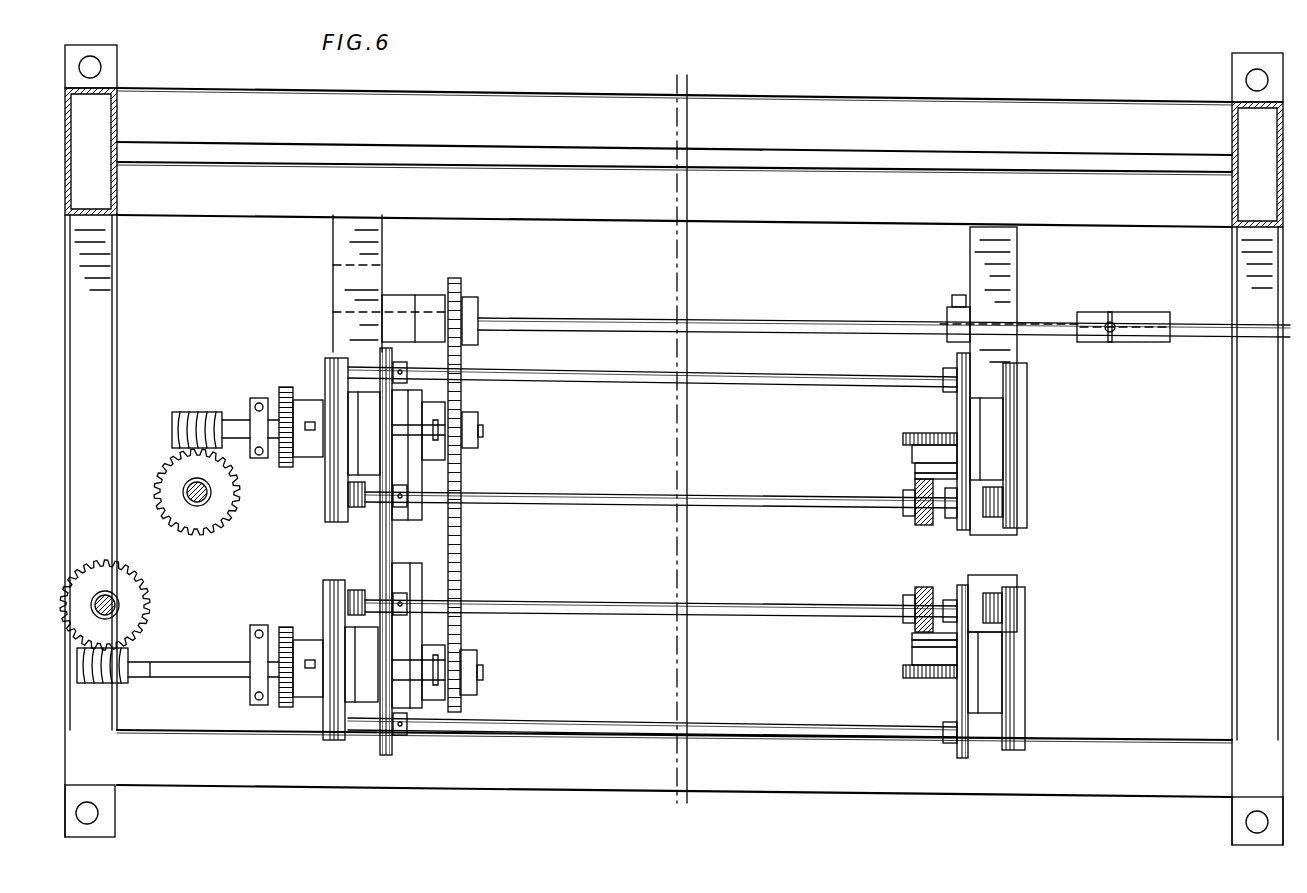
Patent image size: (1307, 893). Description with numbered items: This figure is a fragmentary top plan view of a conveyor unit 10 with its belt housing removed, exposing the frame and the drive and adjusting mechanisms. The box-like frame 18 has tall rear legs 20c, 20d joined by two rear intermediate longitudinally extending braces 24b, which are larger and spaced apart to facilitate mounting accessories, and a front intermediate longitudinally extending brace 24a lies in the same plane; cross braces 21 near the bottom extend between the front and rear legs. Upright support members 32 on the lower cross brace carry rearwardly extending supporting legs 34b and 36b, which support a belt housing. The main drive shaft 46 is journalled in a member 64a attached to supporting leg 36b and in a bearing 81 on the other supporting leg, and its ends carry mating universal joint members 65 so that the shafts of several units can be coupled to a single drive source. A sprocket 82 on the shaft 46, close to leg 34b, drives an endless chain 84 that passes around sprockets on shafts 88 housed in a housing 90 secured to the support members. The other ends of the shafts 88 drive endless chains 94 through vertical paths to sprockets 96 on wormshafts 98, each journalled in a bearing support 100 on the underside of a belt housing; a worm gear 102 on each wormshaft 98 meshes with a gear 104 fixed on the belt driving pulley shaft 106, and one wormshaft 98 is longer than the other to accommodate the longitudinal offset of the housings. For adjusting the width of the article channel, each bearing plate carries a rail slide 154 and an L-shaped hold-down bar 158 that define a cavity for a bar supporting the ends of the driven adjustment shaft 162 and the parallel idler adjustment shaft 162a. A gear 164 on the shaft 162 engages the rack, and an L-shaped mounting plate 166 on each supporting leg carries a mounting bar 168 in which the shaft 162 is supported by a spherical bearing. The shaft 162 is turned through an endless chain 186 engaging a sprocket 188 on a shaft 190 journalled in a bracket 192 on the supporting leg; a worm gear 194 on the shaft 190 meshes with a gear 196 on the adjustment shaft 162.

The conveyor unit 10 is at (292, 266).
The box-like frame 18 is at (905, 96).
The rear leg 20c is at (118, 100).
The rear leg 20d is at (1232, 120).
The cross brace 21 is at (125, 336).
The front intermediate longitudinally extending brace 24a is at (810, 777).
The rear intermediate longitudinally extending brace 24b is at (615, 134).
The support member 32 is at (462, 290).
The rear supporting leg 34b is at (382, 245).
The rear supporting leg 36b is at (1018, 272).
The main drive shaft 46 is at (845, 318).
The journalling member 64a is at (960, 300).
The universal joint members 65 is at (1140, 345).
The bearing 81 is at (395, 298).
The sprocket 82 is at (454, 495).
The endless chain 84 is at (462, 568).
The shaft 88 is at (485, 432).
The housing 90 is at (395, 548).
The endless chain 94 is at (286, 388).
The sprocket 96 is at (287, 467).
The wormshaft 98 is at (240, 418).
The bearing support 100 is at (259, 398).
The worm gear 102 is at (195, 412).
The gear 104 is at (158, 525).
The belt driving pulley shaft 106 is at (190, 488).
The rail slide 154 is at (385, 355).
The L-shaped hold-down bar 158 is at (330, 366).
The driven adjustment shaft 162 is at (640, 493).
The idler adjustment shaft 162a is at (752, 385).
The gear 164 is at (985, 517).
The L-shaped mounting plate 166 is at (355, 455).
The mounting bar 168 is at (957, 402).
The endless chain 186 is at (912, 447).
The sprocket 188 is at (920, 440).
The shaft 190 is at (915, 476).
The bracket 192 is at (915, 465).
The worm gear 194 is at (915, 492).
The gear 196 is at (915, 512).